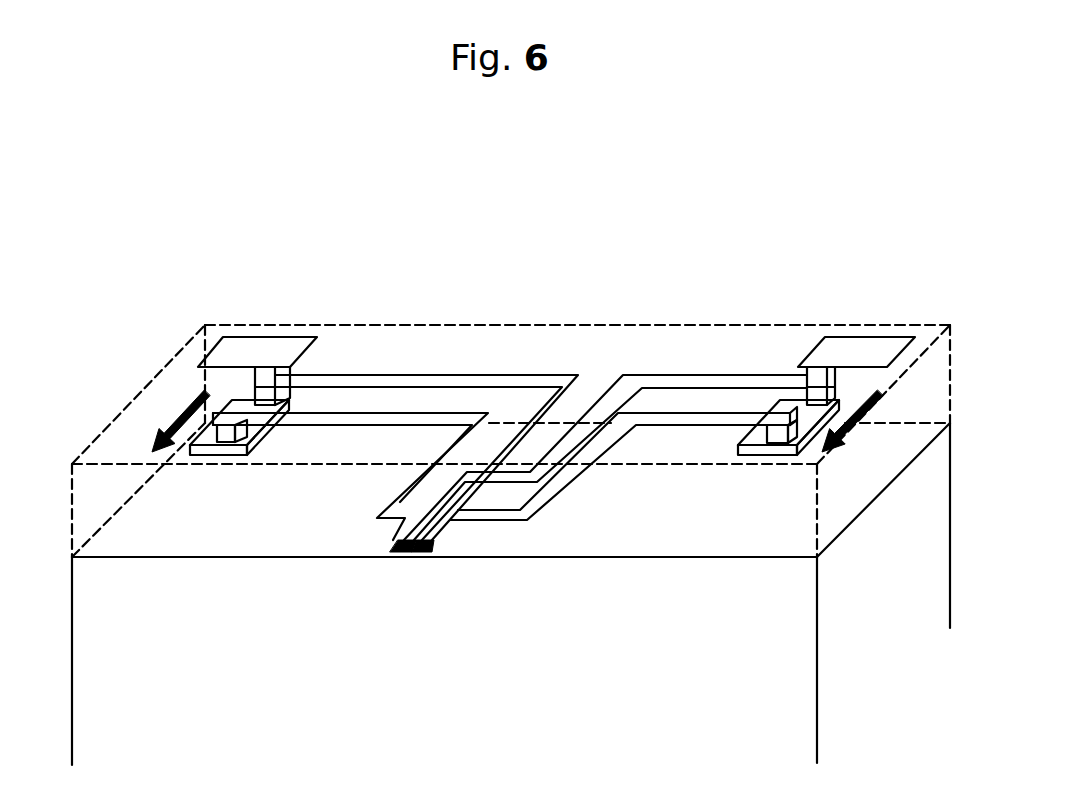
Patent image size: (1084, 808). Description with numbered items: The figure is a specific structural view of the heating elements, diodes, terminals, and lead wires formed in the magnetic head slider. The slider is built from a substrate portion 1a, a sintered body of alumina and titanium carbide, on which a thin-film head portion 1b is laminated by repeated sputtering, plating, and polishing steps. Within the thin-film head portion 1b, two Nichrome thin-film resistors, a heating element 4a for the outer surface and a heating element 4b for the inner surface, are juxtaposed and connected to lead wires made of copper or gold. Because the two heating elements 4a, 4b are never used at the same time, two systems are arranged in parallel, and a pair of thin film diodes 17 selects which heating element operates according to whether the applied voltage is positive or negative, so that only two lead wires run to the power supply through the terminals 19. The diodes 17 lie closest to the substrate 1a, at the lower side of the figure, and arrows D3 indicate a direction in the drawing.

The substrate portion 1a is at (170, 607).
The thin-film head portion 1b is at (170, 544).
The heating element for outer surface 4a is at (432, 553).
The heating element for inner surface 4b is at (390, 553).
The thin film diode 17 is at (210, 447).
The terminal 19 is at (257, 345).
The direction D3 is at (197, 398).